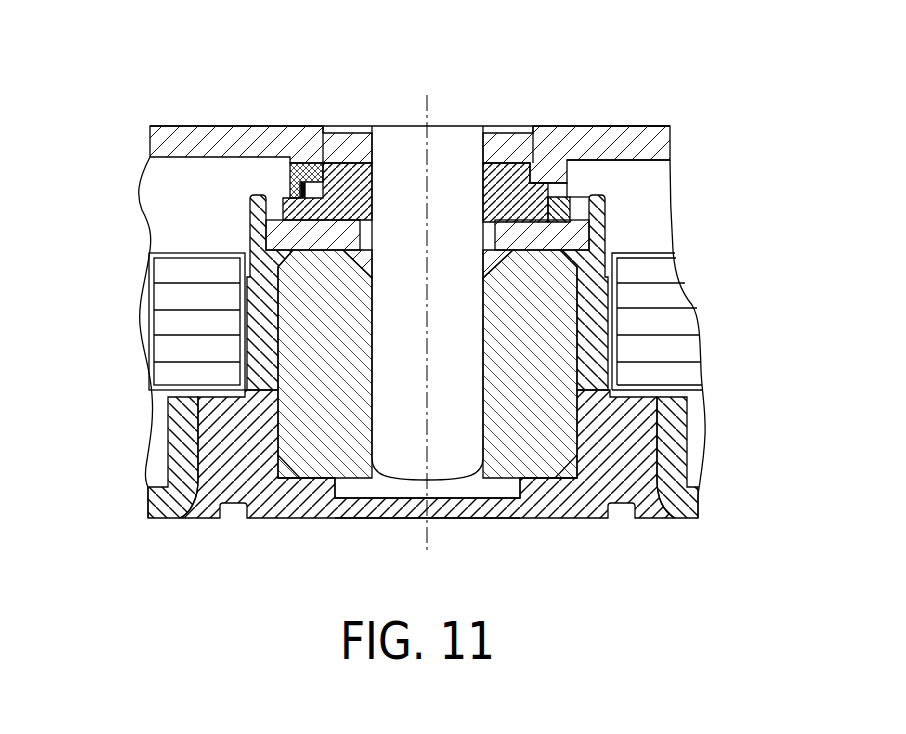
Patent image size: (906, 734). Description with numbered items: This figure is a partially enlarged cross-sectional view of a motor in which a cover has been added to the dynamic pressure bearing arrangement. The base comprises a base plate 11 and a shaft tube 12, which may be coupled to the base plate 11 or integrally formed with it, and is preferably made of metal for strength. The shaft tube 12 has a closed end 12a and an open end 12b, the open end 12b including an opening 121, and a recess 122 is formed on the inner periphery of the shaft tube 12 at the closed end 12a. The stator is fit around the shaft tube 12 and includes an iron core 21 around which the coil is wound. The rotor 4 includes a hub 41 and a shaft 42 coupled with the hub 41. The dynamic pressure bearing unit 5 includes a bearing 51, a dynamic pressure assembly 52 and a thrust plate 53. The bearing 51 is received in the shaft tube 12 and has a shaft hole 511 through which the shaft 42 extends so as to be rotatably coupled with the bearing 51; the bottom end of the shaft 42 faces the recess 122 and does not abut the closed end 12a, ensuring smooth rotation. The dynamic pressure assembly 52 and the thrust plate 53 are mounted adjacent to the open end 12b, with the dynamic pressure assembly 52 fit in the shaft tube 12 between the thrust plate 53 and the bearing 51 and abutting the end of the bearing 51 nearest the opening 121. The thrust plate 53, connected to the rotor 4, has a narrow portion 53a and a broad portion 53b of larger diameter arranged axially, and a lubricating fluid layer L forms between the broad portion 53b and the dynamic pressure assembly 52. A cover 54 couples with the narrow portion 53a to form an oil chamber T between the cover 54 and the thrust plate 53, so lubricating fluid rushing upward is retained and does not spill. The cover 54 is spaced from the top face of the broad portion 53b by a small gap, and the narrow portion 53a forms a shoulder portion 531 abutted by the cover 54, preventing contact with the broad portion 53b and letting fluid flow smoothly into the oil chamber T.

The rotor 4 is at (158, 125).
The hub 41 is at (223, 127).
The shaft 42 is at (467, 417).
The dynamic pressure bearing unit 5 is at (563, 120).
The bearing 51 is at (307, 297).
The shaft hole 511 is at (330, 476).
The dynamic pressure assembly 52 is at (282, 238).
The thrust plate 53 is at (290, 64).
The narrow portion 53a is at (353, 163).
The broad portion 53b is at (302, 182).
The shoulder portion 531 is at (542, 182).
The cover 54 is at (290, 172).
The oil chamber T is at (555, 185).
The lubricating fluid layer L is at (570, 200).
The opening 121 is at (602, 166).
The shaft tube 12 is at (600, 320).
The closed end 12a is at (458, 520).
The open end 12b is at (645, 128).
The recess 122 is at (397, 510).
The iron core 21 is at (663, 268).
The base plate 11 is at (683, 518).